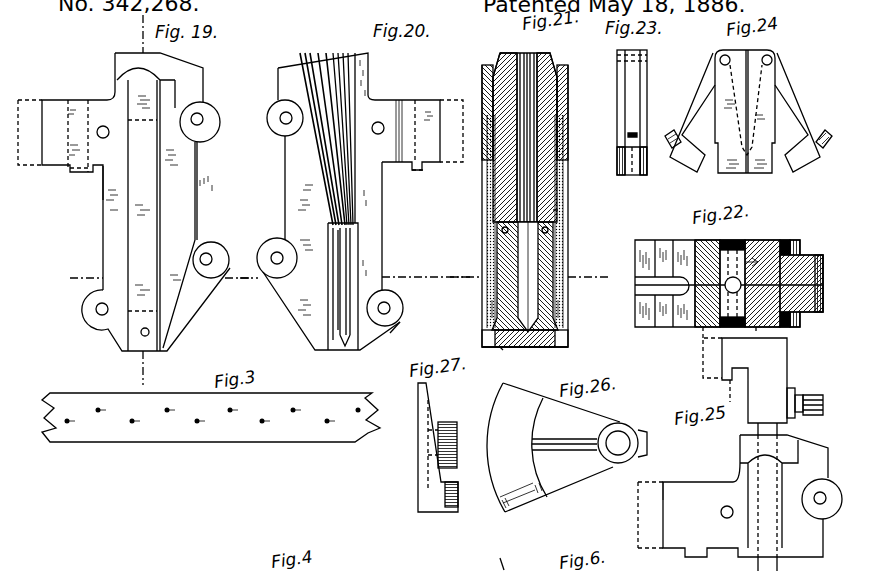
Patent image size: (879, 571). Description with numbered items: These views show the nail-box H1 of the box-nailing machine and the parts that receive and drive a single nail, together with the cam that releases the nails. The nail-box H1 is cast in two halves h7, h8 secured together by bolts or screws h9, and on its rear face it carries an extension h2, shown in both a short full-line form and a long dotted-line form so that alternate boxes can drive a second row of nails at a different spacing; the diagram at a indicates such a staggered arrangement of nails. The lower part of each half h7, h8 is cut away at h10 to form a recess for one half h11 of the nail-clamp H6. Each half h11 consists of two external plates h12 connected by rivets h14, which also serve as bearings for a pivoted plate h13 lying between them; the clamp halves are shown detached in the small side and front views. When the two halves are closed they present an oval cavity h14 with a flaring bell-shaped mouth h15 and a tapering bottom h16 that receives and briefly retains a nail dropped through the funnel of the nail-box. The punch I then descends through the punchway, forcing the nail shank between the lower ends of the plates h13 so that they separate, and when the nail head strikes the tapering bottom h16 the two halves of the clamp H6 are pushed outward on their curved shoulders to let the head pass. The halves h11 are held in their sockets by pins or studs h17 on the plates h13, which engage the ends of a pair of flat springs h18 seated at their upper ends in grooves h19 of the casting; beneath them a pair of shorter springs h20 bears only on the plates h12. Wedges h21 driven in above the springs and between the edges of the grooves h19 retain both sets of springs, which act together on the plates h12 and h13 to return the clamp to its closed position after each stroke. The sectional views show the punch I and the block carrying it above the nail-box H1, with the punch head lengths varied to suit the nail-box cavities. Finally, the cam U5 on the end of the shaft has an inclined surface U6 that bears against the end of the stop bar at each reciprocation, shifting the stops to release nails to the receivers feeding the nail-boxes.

In FIG. 19, the nail-box H1 is at (146, 202).
In FIG. 20, the nail-box H1 is at (324, 201).
In FIG. 21, the nail-box H1 is at (537, 200).
In FIG. 22, the nail-box H1 is at (729, 276).
In FIG. 25, the nail-box H1 is at (752, 496).
In FIG. 20, the nail-clamp H6 is at (350, 68).
In FIG. 21, the nail-clamp H6 is at (525, 358).
In FIG. 23, the nail-clamp H6 is at (642, 112).
In FIG. 24, the nail-clamp H6 is at (745, 111).
In FIG. 19, the extension h2 is at (53, 136).
In FIG. 20, the extension h2 is at (422, 135).
In FIG. 22, the extension h2 is at (660, 240).
In FIG. 25, the extension h2 is at (659, 515).
In FIG. 19, the half of nail-box h7 is at (112, 200).
In FIG. 20, the half of nail-box h7 is at (307, 207).
In FIG. 21, the half of nail-box h7 is at (510, 53).
In FIG. 22, the half of nail-box h7 is at (784, 274).
In FIG. 25, the half of nail-box h7 is at (676, 501).
In FIG. 21, the half of nail-box h8 is at (540, 53).
In FIG. 22, the half of nail-box h8 is at (703, 339).
In FIG. 19, the bolts or screws h9 is at (99, 308).
In FIG. 20, the bolts or screws h9 is at (283, 112).
In FIG. 25, the bolts or screws h9 is at (727, 518).
In FIG. 20, the cut-away recess h10 is at (362, 330).
In FIG. 21, the cut-away recess h10 is at (558, 215).
In FIG. 21, the half of nail-clamp h11 is at (475, 336).
In FIG. 22, the half of nail-clamp h11 is at (761, 336).
In FIG. 23, the external plates h12 is at (632, 103).
In FIG. 24, the external plates h12 is at (745, 110).
In FIG. 21, the pivoted plate h13 is at (497, 260).
In FIG. 23, the pivoted plate h13 is at (634, 175).
In FIG. 24, the pivoted plate h13 is at (748, 50).
In FIG. 20, the rivets / oval cavity h14 is at (345, 297).
In FIG. 21, the rivets / oval cavity h14 is at (528, 277).
In FIG. 23, the rivets / oval cavity h14 is at (632, 56).
In FIG. 24, the rivets / oval cavity h14 is at (720, 60).
In FIG. 22, the rivets / oval cavity h14 is at (733, 285).
In FIG. 21, the bell-shaped mouth h15 is at (484, 224).
In FIG. 21, the tapering bottom h16 is at (504, 348).
In FIG. 22, the pins or studs h17 is at (757, 264).
In FIG. 21, the flat springs h18 is at (484, 315).
In FIG. 22, the flat springs h18 is at (720, 275).
In FIG. 19, the grooves h19 is at (175, 135).
In FIG. 21, the shorter springs h20 is at (484, 296).
In FIG. 19, the wedges h21 is at (142, 215).
In FIG. 21, the wedges h21 is at (482, 86).
In FIG. 25, the wedges h21 is at (766, 497).
In FIG. 25, the punch I is at (763, 380).
In FIG. 26, the cam U5 is at (589, 448).
In FIG. 27, the cam U5 is at (421, 447).
In FIG. 26, the inclined surface U6 is at (553, 447).
In FIG. 27, the inclined surface U6 is at (433, 412).
In FIG. 3, the center line a is at (245, 570).